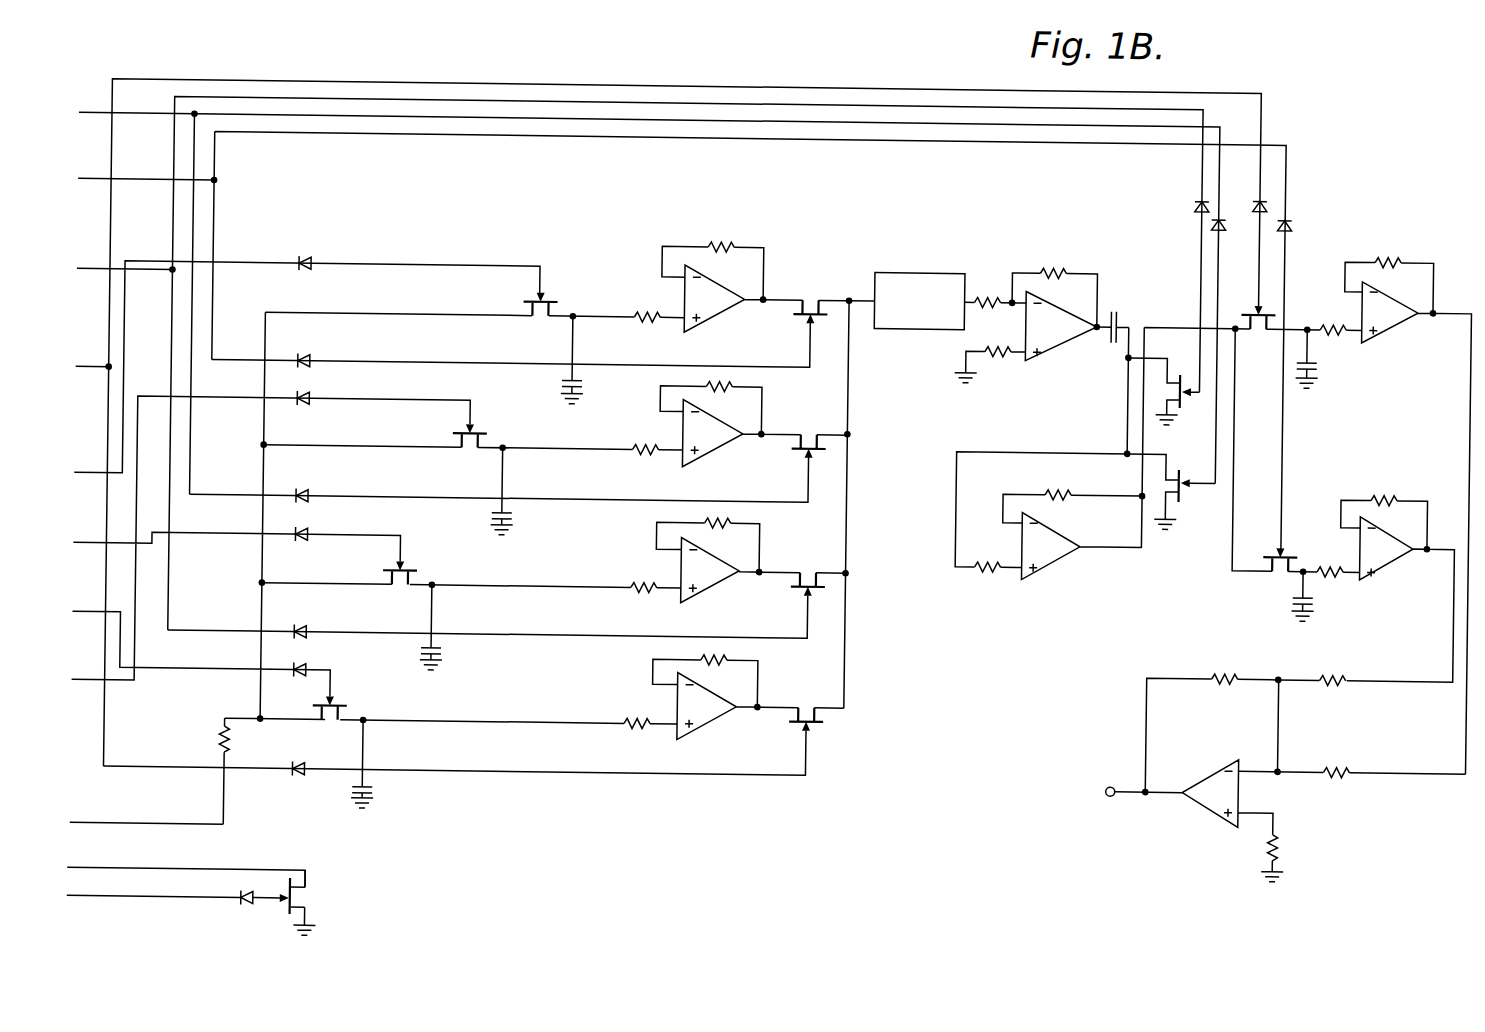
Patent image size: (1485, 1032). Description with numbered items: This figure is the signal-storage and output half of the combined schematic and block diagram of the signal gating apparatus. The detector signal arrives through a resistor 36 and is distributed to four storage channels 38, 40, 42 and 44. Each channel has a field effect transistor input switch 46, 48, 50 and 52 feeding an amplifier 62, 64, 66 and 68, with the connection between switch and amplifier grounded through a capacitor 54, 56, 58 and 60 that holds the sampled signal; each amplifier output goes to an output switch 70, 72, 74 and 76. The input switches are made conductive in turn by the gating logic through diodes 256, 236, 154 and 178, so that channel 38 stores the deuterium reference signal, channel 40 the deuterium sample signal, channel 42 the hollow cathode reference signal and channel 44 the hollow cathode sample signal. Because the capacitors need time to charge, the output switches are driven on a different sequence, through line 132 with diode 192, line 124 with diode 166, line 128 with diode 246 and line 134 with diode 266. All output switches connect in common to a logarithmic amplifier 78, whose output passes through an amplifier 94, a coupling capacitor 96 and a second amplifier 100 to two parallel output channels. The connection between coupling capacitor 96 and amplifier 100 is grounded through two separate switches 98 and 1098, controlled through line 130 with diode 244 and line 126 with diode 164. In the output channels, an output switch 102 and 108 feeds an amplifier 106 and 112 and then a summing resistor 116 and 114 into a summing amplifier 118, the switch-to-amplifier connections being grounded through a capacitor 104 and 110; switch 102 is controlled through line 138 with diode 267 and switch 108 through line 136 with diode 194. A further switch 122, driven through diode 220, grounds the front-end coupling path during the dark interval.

The resistor 36 is at (222, 746).
The storage channel 38 is at (597, 311).
The storage channel 40 is at (540, 449).
The storage channel 42 is at (491, 584).
The storage channel 44 is at (411, 723).
The input switch 46 is at (553, 302).
The input switch 48 is at (483, 438).
The input switch 50 is at (417, 575).
The input switch 52 is at (350, 712).
The capacitor 54 is at (583, 387).
The capacitor 56 is at (514, 517).
The capacitor 58 is at (447, 655).
The capacitor 60 is at (380, 797).
The amplifier 62 is at (707, 324).
The amplifier 64 is at (721, 459).
The amplifier 66 is at (721, 587).
The amplifier 68 is at (722, 724).
The output switch 70 is at (807, 297).
The output switch 72 is at (818, 444).
The output switch 74 is at (806, 570).
The output switch 76 is at (806, 706).
The logarithmic amplifier 78 is at (929, 270).
The amplifier 94 is at (1064, 345).
The coupling capacitor 96 is at (1118, 306).
The grounding switch 98 is at (1190, 401).
The grounding switch 1098 is at (1192, 500).
The second amplifier 100 is at (1050, 573).
The output switch 102 is at (1266, 334).
The capacitor 104 is at (1327, 363).
The amplifier 106 is at (1400, 322).
The output switch 108 is at (1276, 552).
The capacitor 110 is at (1322, 598).
The amplifier 112 is at (1398, 563).
The summing resistor 114 is at (1338, 683).
The summing resistor 116 is at (1340, 779).
The summing amplifier 118 is at (1197, 786).
The switch 122 is at (312, 906).
The line 124 is at (633, 503).
The line 126 is at (641, 121).
The line 128 is at (608, 639).
The line 130 is at (697, 104).
The line 132 is at (779, 368).
The line 134 is at (662, 776).
The line 136 is at (996, 141).
The line 138 is at (823, 87).
The diode 154 is at (305, 534).
The diode 164 is at (1210, 224).
The diode 166 is at (305, 495).
The diode 178 is at (305, 670).
The diode 192 is at (305, 358).
The diode 194 is at (1290, 222).
The diode 220 is at (254, 908).
The diode 236 is at (306, 398).
The diode 244 is at (1190, 202).
The diode 246 is at (305, 632).
The diode 256 is at (308, 260).
The diode 266 is at (302, 768).
The diode 267 is at (1268, 202).